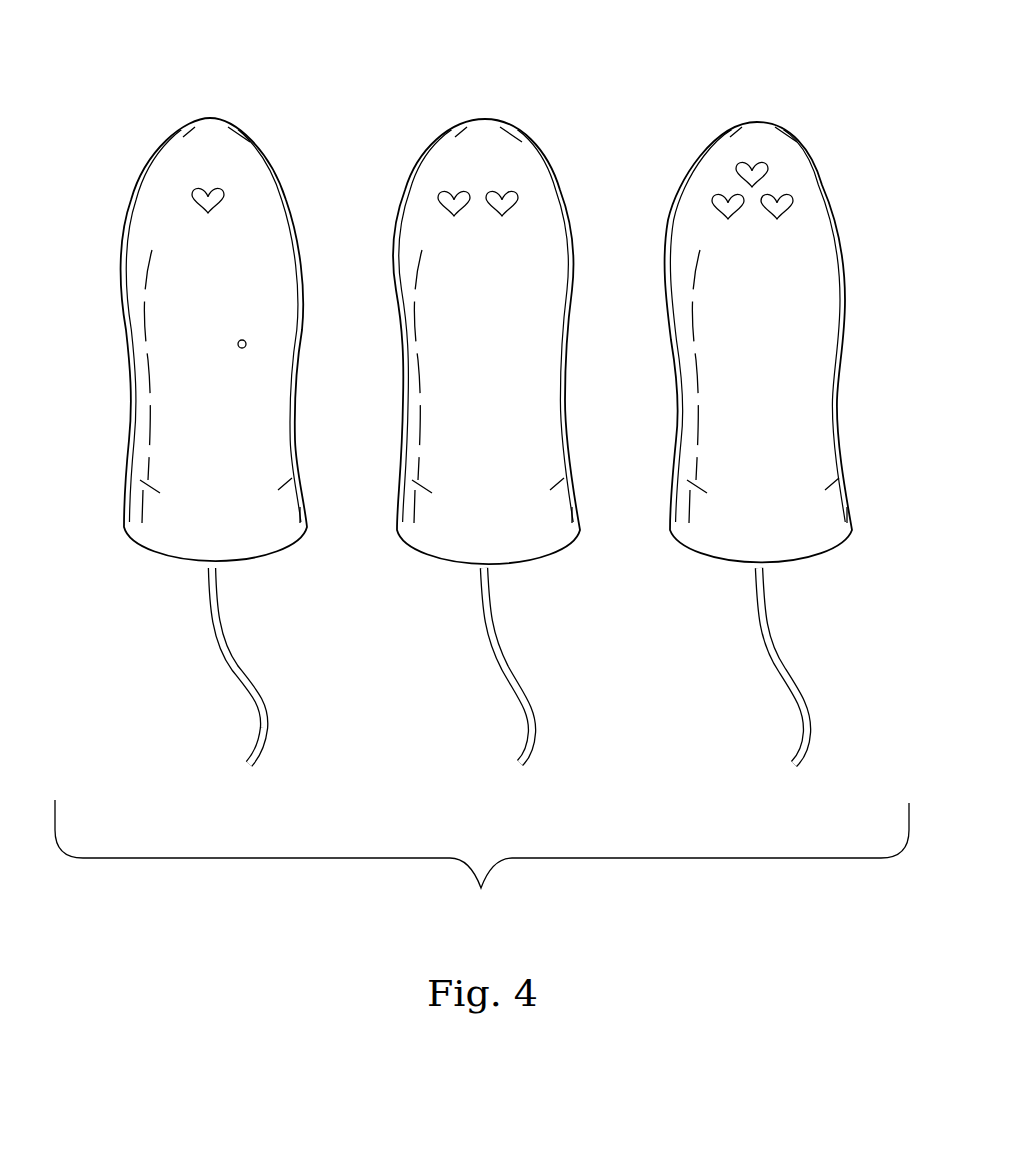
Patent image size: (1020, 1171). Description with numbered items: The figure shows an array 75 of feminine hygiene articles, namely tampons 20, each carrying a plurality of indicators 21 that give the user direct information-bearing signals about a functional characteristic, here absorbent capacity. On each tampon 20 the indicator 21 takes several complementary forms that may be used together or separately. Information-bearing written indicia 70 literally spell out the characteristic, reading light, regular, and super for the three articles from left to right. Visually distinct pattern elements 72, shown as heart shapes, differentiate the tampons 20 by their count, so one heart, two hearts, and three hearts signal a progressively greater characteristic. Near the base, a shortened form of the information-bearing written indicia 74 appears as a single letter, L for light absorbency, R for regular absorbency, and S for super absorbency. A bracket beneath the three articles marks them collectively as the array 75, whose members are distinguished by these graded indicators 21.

The tampon 20 is at (226, 90).
The indicator 21 is at (218, 190).
The information-bearing written indicia 70 is at (183, 356).
The visually distinct pattern elements 72 is at (195, 190).
The shortened form of the information-bearing written indicia 74 is at (200, 548).
The array 75 is at (482, 860).